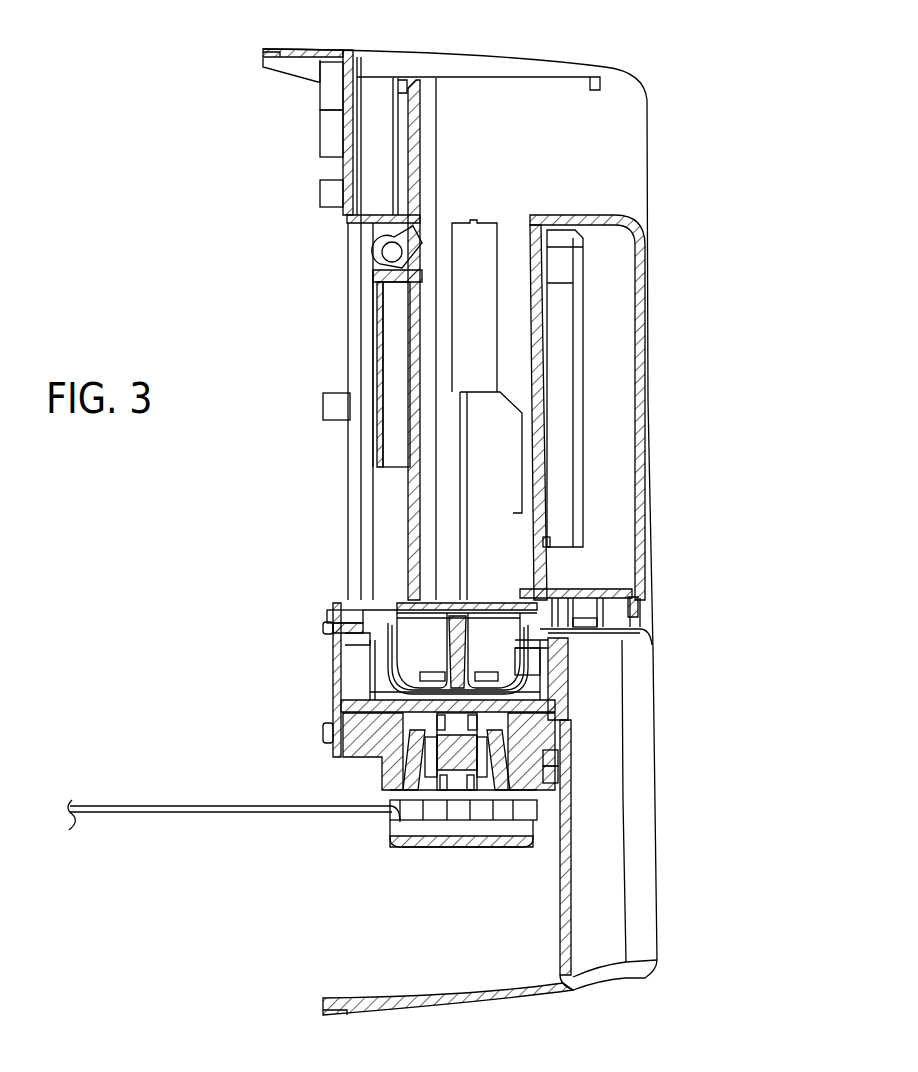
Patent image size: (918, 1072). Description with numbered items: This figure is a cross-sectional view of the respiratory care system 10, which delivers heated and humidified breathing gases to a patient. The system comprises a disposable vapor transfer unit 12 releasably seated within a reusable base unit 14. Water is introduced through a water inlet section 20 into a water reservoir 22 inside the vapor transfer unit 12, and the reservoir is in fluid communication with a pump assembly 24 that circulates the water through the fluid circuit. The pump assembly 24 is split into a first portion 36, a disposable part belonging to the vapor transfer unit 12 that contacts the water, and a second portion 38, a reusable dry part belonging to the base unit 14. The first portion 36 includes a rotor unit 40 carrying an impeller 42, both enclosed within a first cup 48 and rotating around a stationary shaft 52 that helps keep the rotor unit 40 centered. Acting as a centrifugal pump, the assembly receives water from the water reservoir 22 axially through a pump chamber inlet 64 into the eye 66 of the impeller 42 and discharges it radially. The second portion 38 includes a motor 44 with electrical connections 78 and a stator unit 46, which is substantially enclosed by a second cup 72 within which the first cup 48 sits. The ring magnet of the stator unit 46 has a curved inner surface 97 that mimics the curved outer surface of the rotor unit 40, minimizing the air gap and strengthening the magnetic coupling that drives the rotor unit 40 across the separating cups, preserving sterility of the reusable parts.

The respiratory care system 10 is at (612, 35).
The vapor transfer unit 12 is at (590, 140).
The base unit 14 is at (643, 100).
The water inlet section 20 is at (476, 100).
The water reservoir 22 is at (503, 226).
The pump assembly 24 is at (360, 683).
The first portion 36 is at (626, 626).
The second portion 38 is at (560, 667).
The rotor unit 40 is at (392, 630).
The impeller 42 is at (520, 592).
The motor 44 is at (437, 763).
The stator unit 46 is at (392, 690).
The first cup 48 is at (550, 703).
The stationary shaft 52 is at (370, 652).
The pump chamber inlet 64 is at (447, 600).
The eye 66 is at (488, 615).
The second cup 72 is at (548, 712).
The electrical connections 78 is at (237, 806).
The curved inner surface 97 is at (568, 656).